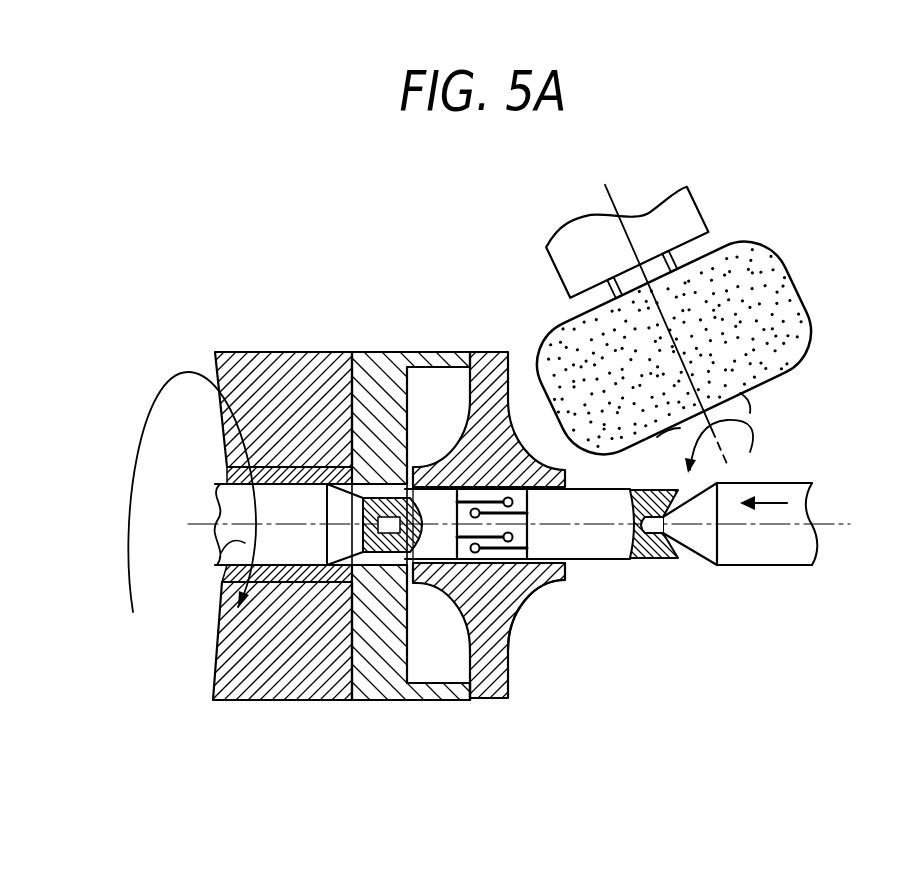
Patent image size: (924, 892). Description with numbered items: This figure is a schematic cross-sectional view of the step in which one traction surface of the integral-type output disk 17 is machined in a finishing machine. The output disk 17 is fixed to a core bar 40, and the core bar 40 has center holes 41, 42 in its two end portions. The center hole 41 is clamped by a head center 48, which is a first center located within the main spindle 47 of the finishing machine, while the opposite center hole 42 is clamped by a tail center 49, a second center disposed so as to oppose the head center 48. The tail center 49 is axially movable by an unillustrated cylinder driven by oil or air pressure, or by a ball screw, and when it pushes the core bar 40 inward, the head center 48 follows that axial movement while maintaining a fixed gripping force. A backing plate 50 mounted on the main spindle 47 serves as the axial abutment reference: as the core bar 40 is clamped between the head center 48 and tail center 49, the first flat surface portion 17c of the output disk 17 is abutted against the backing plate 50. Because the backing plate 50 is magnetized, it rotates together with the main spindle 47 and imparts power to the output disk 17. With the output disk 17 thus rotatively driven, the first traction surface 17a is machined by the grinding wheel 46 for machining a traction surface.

The output disk 17 is at (487, 655).
The first traction surface 17a is at (520, 612).
The first flat surface portion 17c is at (463, 687).
The core bar 40 is at (605, 538).
The center hole 41 is at (347, 553).
The center hole 42 is at (698, 553).
The grinding wheel 46 is at (755, 310).
The main spindle 47 is at (258, 388).
The head center 48 is at (218, 557).
The tail center 49 is at (757, 547).
The backing plate 50 is at (378, 380).